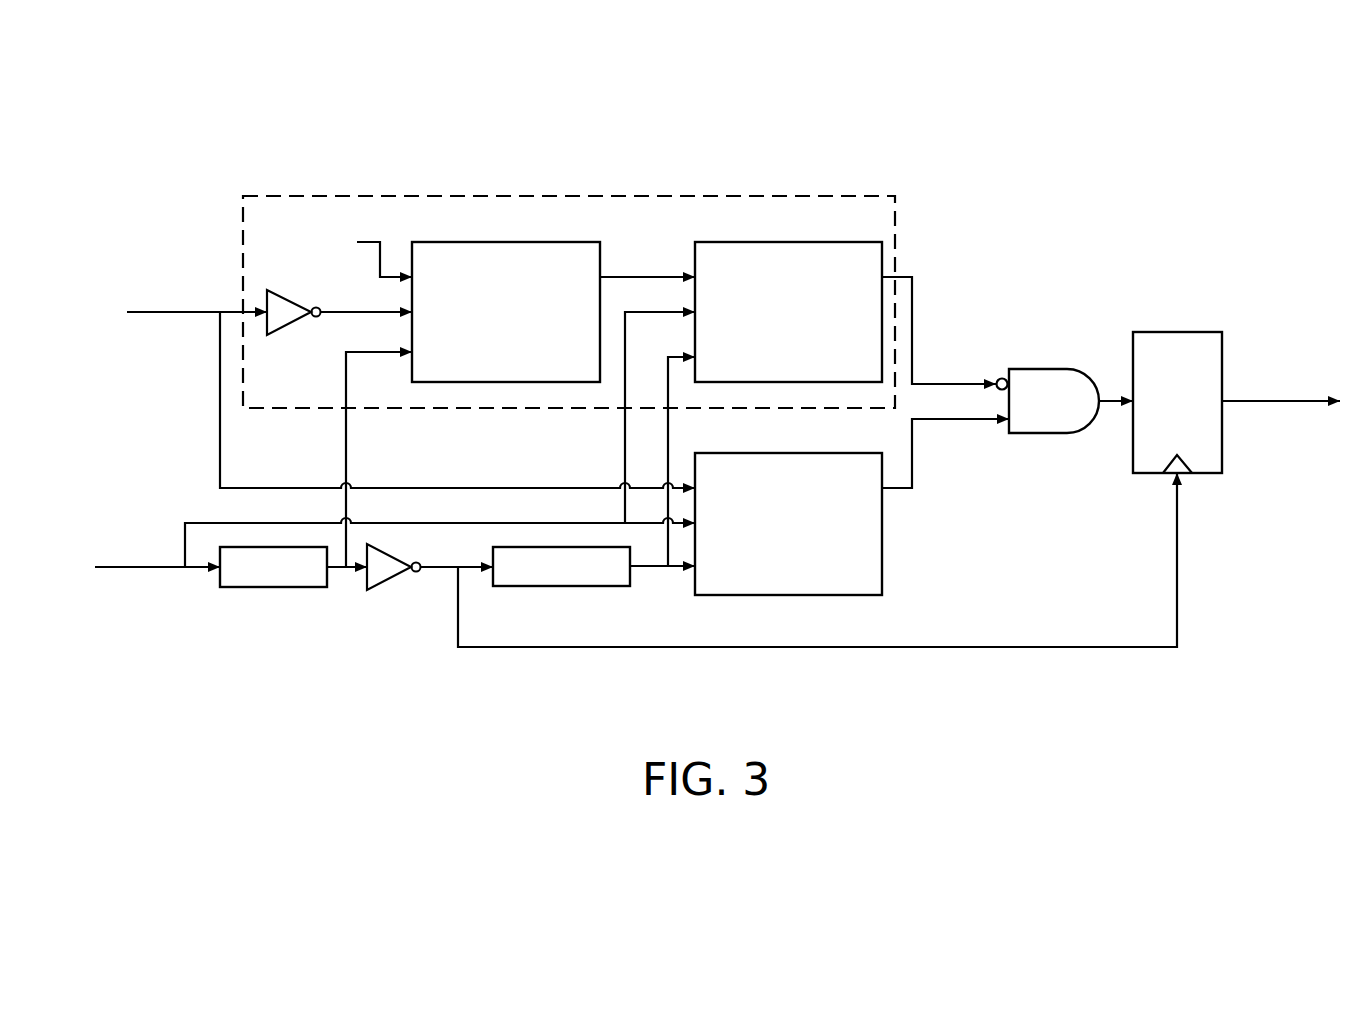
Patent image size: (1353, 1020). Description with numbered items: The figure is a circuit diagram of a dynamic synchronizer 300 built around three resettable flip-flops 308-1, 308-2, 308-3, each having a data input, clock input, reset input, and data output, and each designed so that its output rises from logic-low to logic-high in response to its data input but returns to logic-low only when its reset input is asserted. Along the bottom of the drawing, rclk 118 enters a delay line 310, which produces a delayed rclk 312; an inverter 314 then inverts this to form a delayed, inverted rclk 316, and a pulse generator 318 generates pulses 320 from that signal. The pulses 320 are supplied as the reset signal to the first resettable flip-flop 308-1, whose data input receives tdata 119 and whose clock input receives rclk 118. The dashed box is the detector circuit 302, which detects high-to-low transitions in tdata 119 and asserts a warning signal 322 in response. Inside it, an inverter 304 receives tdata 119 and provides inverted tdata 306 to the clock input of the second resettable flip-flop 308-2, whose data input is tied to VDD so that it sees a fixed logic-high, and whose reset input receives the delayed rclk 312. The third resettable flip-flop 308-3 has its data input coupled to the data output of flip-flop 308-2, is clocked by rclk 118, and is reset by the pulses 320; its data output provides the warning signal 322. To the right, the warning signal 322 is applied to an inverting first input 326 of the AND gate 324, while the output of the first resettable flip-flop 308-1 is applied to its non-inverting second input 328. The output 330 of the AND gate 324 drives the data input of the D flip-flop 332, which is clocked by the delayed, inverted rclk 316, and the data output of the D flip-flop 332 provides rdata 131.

The dynamic synchronizer 300 is at (570, 114).
The detector circuit 302 is at (569, 302).
The inverter 304 is at (279, 333).
The inverted tdata 306 is at (331, 311).
The first resettable flip-flop 308-1 is at (788, 524).
The second resettable flip-flop 308-2 is at (506, 312).
The third resettable flip-flop 308-3 is at (788, 312).
The delay line 310 is at (237, 587).
The delayed rclk 312 is at (338, 569).
The inverter 314 is at (373, 590).
The delayed, inverted rclk 316 is at (799, 560).
The pulse generator 318 is at (502, 586).
The pulses 320 is at (639, 567).
The warning signal 322 is at (966, 329).
The AND gate 324 is at (1054, 401).
The inverting first input 326 is at (1003, 378).
The non-inverting second input 328 is at (1009, 430).
The output 330 is at (1104, 404).
The D flip-flop 332 is at (1177, 402).
The tdata 119 is at (408, 388).
The rclk 118 is at (395, 542).
The rdata 131 is at (1281, 390).